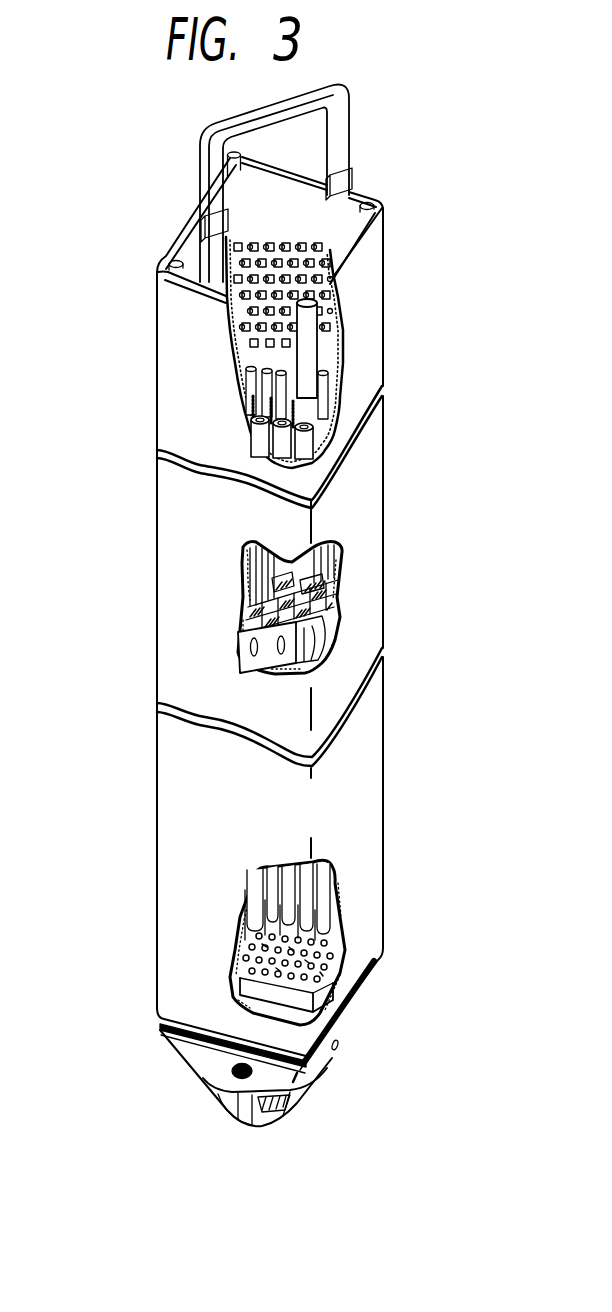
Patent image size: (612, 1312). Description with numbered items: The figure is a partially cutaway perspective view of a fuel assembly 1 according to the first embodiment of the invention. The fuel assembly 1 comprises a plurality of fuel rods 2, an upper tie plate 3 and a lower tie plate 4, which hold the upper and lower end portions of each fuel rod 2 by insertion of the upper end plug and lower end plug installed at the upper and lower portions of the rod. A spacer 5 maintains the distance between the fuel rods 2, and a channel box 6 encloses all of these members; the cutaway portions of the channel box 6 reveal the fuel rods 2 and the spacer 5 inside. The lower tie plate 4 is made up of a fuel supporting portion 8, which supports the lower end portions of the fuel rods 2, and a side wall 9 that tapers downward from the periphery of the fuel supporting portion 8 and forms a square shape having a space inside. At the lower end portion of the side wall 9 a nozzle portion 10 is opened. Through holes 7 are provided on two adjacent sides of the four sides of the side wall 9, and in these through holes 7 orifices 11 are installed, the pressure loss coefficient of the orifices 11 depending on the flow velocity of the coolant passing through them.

The fuel assembly 1 is at (127, 275).
The fuel rods 2 is at (255, 446).
The upper tie plate 3 is at (336, 378).
The lower tie plate 4 is at (353, 1012).
The spacer 5 is at (250, 643).
The channel box 6 is at (383, 282).
The through holes 7 is at (238, 1080).
The fuel supporting portion 8 is at (255, 998).
The side wall 9 is at (207, 1058).
The nozzle portion 10 is at (288, 1108).
The orifices 11 is at (300, 1076).